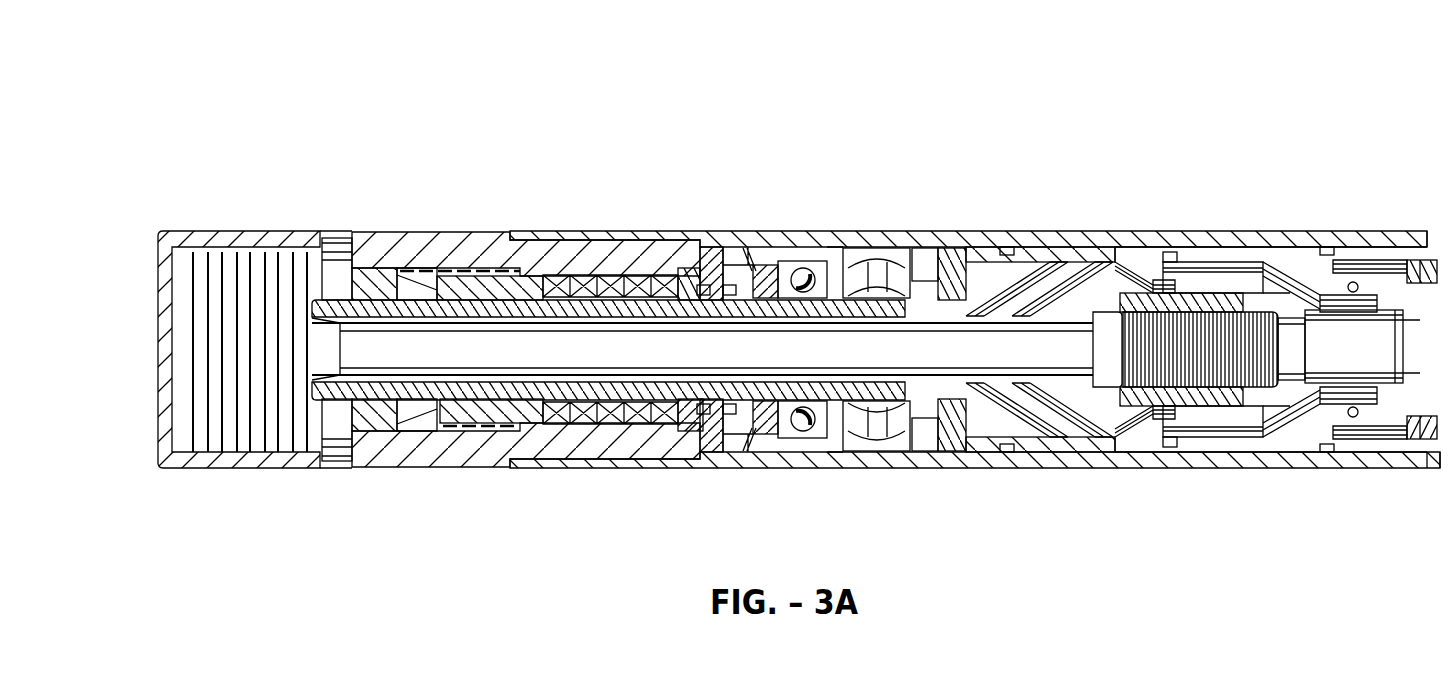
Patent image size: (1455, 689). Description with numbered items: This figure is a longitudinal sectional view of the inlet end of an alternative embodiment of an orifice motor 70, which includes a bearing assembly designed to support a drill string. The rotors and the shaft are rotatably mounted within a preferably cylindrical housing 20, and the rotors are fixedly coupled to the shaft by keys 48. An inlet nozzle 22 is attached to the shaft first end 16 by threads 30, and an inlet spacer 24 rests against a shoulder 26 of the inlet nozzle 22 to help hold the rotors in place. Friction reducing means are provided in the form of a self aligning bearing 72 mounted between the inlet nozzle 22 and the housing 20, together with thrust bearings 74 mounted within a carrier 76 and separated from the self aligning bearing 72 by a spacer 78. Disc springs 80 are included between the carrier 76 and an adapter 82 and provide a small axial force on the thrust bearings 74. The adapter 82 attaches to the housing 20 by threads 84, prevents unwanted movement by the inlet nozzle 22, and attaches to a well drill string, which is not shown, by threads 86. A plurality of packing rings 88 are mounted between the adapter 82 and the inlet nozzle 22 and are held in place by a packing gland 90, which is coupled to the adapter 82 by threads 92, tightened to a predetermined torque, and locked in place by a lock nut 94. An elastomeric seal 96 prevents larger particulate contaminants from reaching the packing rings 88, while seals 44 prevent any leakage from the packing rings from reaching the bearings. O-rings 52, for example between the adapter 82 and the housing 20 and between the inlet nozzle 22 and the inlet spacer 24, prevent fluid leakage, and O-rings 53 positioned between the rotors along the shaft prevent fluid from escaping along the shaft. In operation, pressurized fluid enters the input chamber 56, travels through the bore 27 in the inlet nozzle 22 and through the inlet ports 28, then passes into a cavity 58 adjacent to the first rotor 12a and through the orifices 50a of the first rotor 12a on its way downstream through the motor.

The orifice motor 70 is at (556, 78).
The threads 86 is at (184, 252).
The input chamber 56 is at (187, 422).
The elastomeric seal 96 is at (363, 262).
The adapter 82 is at (530, 245).
The packing gland 90 is at (470, 262).
The lock nut 94 is at (412, 268).
The threads 92 is at (468, 280).
The packing rings 88 is at (612, 280).
The threads 84 is at (655, 245).
The seals 44 is at (722, 285).
The disc springs 80 is at (747, 242).
The carrier 76 is at (770, 246).
The thrust bearings 74 is at (806, 266).
The spacer 78 is at (875, 250).
The self aligning bearing 72 is at (926, 252).
The inlet nozzle 22 is at (963, 252).
The shoulder 26 is at (992, 258).
The inlet ports 28 is at (1061, 250).
The inlet spacer 24 is at (1090, 250).
The housing 20 is at (1215, 240).
The O-rings 52 is at (1164, 247).
The first rotor 12a is at (1260, 247).
The cavity 58 is at (1240, 432).
The orifices 50a is at (1366, 247).
The O-rings 53 is at (1355, 408).
The bore 27 is at (820, 382).
The first end 16 is at (1105, 343).
The threads 30 is at (1226, 312).
The keys 48 is at (1403, 440).